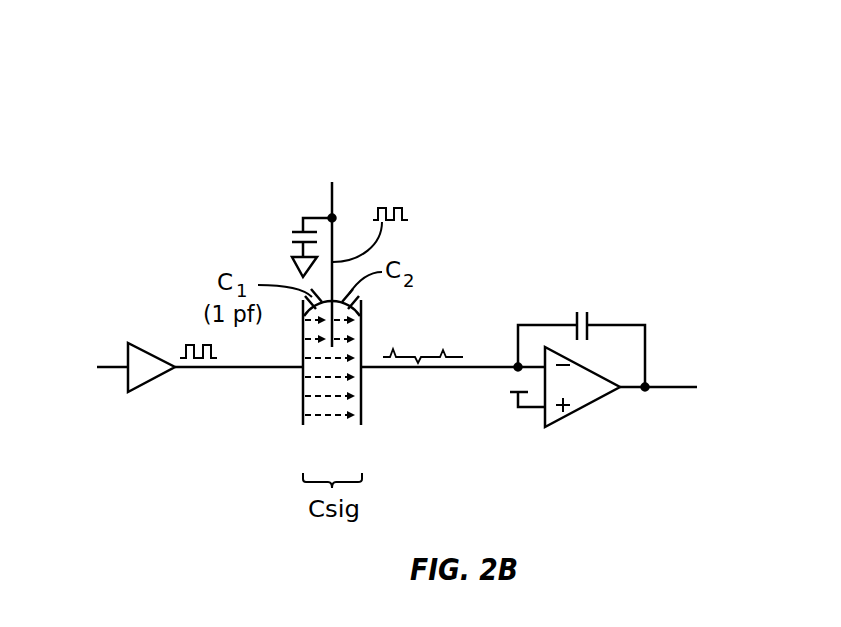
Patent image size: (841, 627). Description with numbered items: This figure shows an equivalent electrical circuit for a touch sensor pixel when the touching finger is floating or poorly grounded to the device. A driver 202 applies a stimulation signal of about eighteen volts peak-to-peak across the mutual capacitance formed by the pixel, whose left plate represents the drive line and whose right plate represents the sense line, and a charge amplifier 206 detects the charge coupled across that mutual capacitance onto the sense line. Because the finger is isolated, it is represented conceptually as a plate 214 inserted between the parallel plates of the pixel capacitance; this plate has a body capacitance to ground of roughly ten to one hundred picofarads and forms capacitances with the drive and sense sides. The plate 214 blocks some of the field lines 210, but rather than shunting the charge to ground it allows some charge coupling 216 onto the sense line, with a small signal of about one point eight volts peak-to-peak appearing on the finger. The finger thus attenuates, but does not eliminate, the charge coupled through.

The driver 202 is at (156, 354).
The charge amplifier 206 is at (583, 407).
The field lines 210 is at (313, 415).
The plate 214 is at (332, 197).
The charge coupling 216 is at (362, 328).